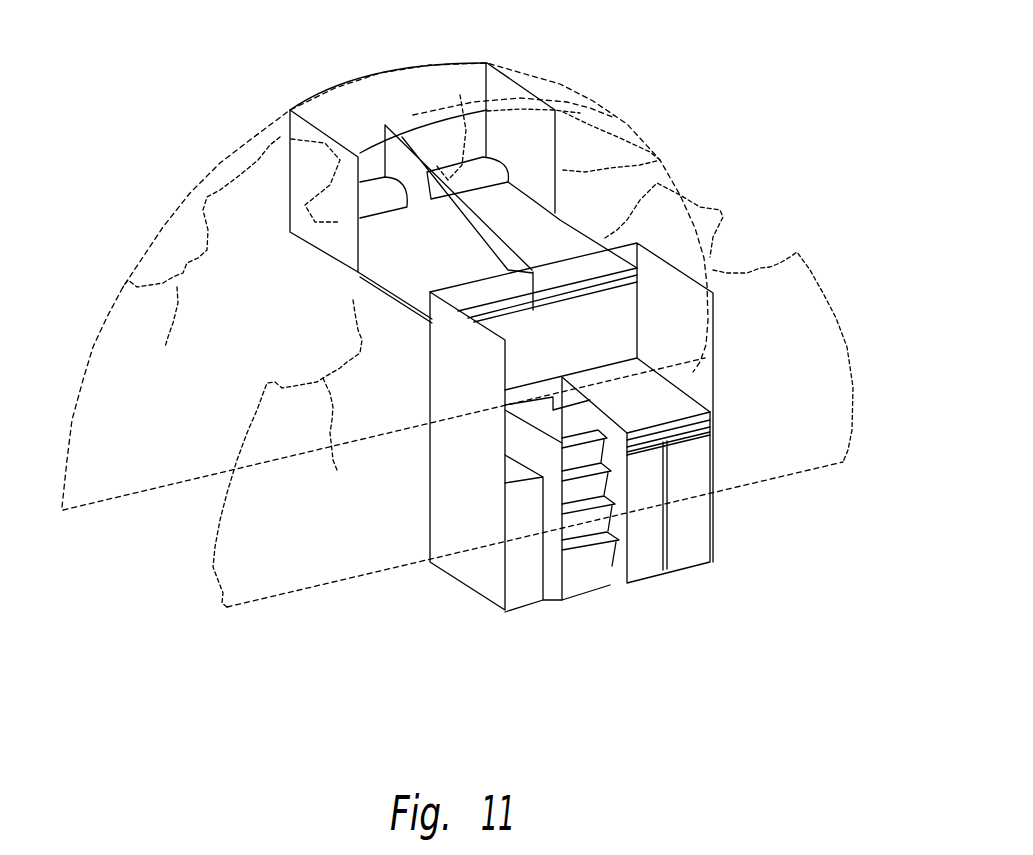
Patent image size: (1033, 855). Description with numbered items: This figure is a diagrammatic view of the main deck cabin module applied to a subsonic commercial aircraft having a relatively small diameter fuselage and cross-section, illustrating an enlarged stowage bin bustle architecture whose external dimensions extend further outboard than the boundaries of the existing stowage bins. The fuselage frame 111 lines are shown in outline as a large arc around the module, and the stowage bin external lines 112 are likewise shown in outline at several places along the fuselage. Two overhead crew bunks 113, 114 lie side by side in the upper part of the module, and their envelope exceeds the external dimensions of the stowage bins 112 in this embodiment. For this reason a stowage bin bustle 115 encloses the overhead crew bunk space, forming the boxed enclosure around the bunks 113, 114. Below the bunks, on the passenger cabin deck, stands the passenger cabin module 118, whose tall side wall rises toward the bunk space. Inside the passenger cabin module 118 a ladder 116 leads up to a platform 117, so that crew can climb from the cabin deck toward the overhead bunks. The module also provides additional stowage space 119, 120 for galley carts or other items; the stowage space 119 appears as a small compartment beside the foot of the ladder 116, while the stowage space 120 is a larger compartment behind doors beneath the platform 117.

The fuselage frame 111 is at (625, 120).
The stowage bin external lines 112 is at (467, 92).
The bunk 113 is at (412, 251).
The bunk 114 is at (517, 225).
The stowage bin bustle 115 is at (523, 83).
The ladder 116 is at (580, 560).
The platform 117 is at (690, 392).
The passenger cabin module 118 is at (467, 573).
The additional stowage space 119 is at (528, 600).
The additional stowage space 120 is at (645, 573).